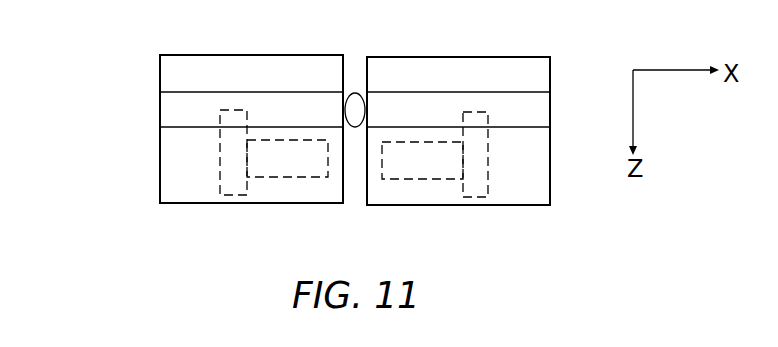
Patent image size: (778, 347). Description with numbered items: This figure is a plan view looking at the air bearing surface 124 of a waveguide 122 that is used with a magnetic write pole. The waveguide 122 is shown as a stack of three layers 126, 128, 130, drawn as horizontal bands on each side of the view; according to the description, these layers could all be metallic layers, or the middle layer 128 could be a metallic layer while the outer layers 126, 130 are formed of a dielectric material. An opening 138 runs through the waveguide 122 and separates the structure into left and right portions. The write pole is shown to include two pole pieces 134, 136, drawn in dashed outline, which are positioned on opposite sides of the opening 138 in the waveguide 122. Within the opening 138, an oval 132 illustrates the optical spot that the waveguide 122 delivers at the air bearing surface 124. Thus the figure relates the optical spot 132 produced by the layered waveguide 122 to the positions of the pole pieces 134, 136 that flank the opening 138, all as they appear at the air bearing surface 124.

The waveguide 122 is at (93, 149).
The air bearing surface 124 is at (160, 112).
The layer 126 is at (548, 175).
The layer 128 is at (548, 115).
The layer 130 is at (548, 78).
The oval 132 is at (357, 108).
The pole piece 134 is at (272, 170).
The pole piece 136 is at (430, 173).
The opening 138 is at (355, 198).